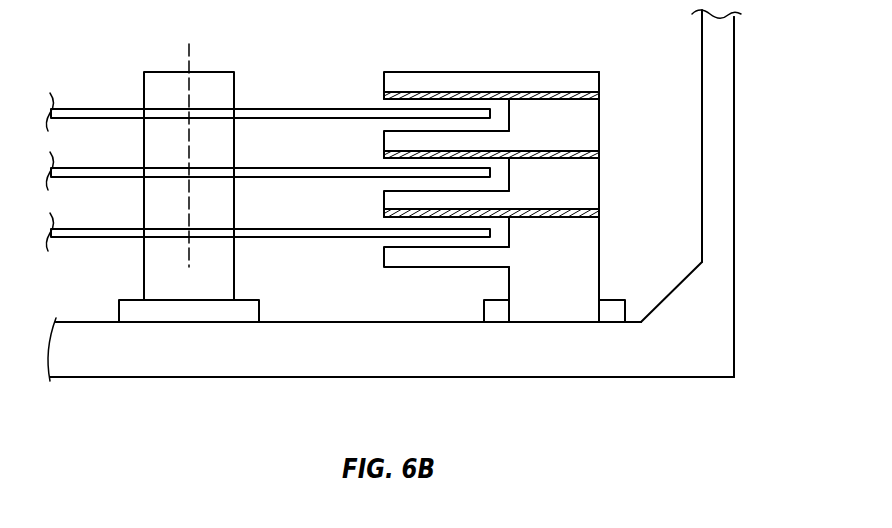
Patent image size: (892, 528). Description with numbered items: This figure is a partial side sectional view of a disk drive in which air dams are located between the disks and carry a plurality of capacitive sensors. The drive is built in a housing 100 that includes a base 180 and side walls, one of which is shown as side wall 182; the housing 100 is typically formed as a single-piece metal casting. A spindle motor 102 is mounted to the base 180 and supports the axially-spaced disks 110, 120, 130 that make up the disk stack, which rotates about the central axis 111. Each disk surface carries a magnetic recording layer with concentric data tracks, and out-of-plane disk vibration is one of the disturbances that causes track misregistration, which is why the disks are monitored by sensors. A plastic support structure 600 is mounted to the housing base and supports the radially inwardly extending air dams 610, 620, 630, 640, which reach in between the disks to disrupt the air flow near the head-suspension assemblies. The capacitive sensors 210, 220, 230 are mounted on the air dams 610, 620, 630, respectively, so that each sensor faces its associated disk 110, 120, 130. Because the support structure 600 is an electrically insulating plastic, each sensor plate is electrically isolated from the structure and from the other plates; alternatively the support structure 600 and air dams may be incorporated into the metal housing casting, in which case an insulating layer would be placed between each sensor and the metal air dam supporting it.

The disk drive housing 100 is at (734, 327).
The spindle motor 102 is at (128, 300).
The disk 110 is at (128, 107).
The axis 111 is at (188, 58).
The disk 120 is at (128, 167).
The disk 130 is at (128, 228).
The base 180 is at (192, 362).
The side wall 182 is at (720, 80).
The capacitive sensor 210 is at (599, 92).
The capacitive sensor 220 is at (599, 152).
The capacitive sensor 230 is at (599, 209).
The plastic support structure 600 is at (599, 72).
The air dam 610 is at (384, 83).
The air dam 620 is at (384, 143).
The air dam 630 is at (384, 203).
The air dam 640 is at (384, 255).